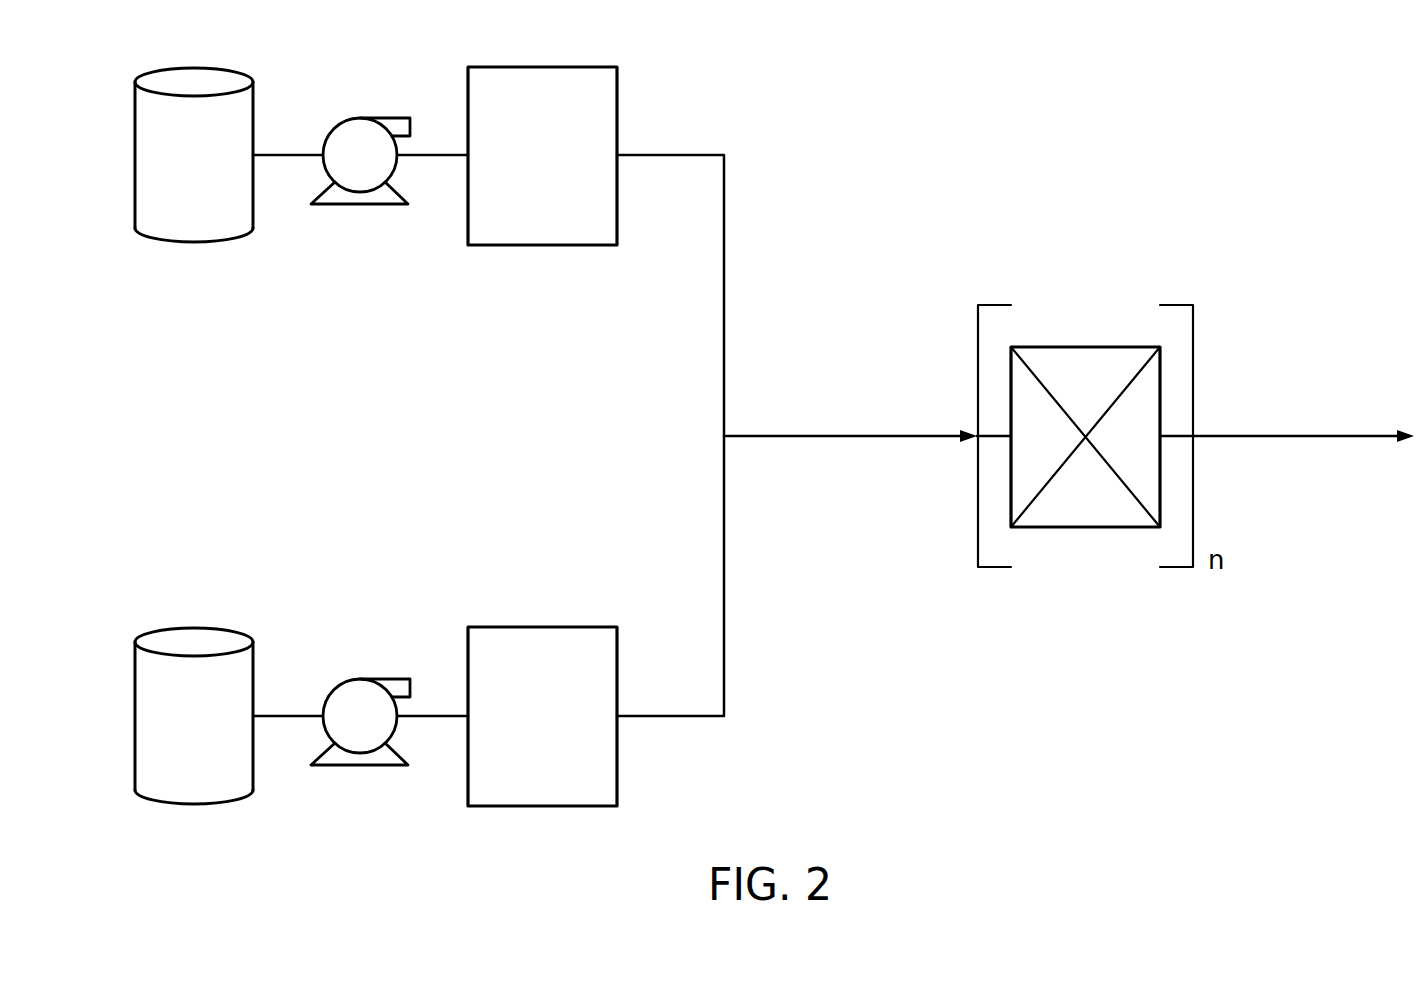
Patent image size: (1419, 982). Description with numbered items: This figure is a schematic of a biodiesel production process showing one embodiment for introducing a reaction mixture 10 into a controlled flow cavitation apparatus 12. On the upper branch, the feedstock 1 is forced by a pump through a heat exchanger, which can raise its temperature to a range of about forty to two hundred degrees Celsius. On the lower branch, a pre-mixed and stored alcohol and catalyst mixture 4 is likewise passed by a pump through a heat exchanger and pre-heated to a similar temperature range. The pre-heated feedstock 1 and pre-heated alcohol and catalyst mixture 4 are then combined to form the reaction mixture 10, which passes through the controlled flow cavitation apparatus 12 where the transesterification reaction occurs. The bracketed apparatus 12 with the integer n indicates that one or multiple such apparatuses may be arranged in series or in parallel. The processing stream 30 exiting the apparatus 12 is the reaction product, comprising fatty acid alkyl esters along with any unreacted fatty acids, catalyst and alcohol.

The feedstock 1 is at (191, 67).
The alcohol and catalyst mixture 4 is at (192, 627).
The reaction mixture 10 is at (857, 436).
The controlled flow cavitation apparatus 12 is at (1090, 347).
The processing stream 30 is at (1297, 436).